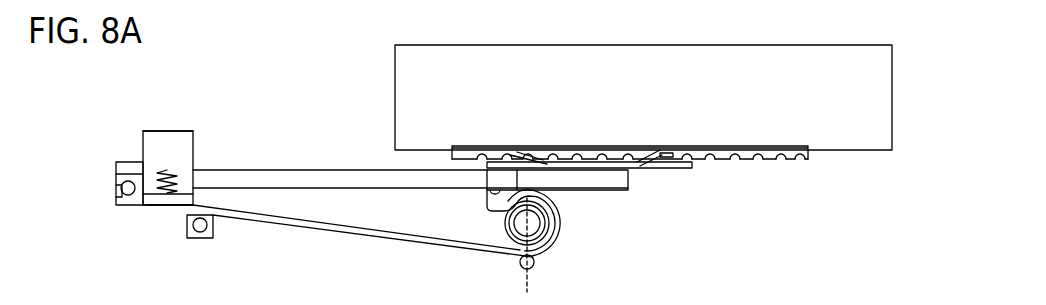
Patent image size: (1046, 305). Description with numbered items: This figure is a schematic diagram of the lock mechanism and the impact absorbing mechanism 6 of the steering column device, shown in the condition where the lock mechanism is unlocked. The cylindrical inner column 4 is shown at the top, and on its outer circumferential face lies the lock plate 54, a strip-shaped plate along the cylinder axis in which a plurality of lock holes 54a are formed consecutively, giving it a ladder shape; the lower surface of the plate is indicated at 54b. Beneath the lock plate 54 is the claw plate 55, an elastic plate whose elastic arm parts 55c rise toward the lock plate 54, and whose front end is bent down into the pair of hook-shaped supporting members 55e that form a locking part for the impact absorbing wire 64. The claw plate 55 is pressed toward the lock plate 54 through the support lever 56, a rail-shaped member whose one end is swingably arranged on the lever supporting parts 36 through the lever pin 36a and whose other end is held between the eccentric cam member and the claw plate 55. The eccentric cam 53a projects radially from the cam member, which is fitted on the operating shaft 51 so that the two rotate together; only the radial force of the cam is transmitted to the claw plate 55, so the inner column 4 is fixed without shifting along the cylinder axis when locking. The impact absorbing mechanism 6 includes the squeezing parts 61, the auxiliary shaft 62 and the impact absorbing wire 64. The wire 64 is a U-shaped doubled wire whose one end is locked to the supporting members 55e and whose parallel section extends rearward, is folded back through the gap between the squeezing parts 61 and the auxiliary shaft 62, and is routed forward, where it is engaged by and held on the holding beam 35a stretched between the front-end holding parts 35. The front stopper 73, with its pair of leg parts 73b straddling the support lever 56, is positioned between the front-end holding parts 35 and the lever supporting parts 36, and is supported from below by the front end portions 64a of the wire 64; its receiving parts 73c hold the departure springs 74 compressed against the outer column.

The inner column 4 is at (870, 152).
The impact absorbing mechanism 6 is at (667, 235).
The front-end holding parts 35 is at (213, 225).
The holding beam 35a is at (200, 232).
The lever supporting parts 36 is at (127, 207).
The lever pin 36a is at (117, 198).
The operating shaft 51 is at (500, 228).
The eccentric cam 53a is at (560, 200).
The lock plate 54 is at (803, 160).
The lock holes 54a is at (737, 163).
The belt lower surface 54b is at (763, 160).
The claw plate 55 is at (677, 170).
The elastic arm parts 55c is at (673, 145).
The supporting members 55e is at (487, 177).
The support lever 56 is at (600, 193).
The squeezing parts 61 is at (547, 237).
The auxiliary shaft 62 is at (517, 263).
The impact absorbing wire 64 is at (360, 232).
The front end portions 64a is at (175, 215).
The front stopper 73 is at (193, 145).
The leg parts 73b is at (167, 138).
The receiving parts 73c is at (152, 207).
The departure springs 74 is at (167, 168).